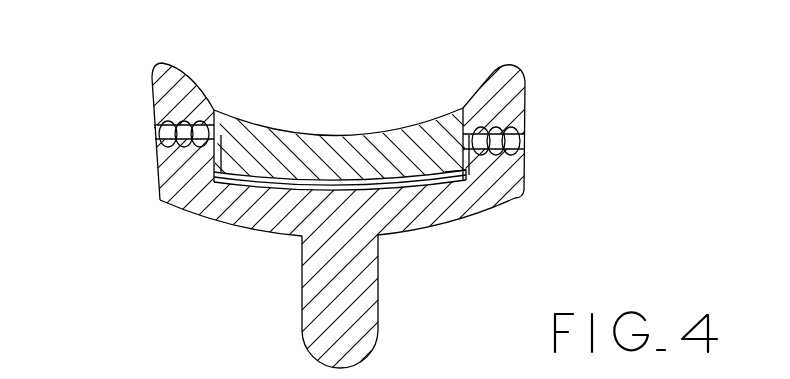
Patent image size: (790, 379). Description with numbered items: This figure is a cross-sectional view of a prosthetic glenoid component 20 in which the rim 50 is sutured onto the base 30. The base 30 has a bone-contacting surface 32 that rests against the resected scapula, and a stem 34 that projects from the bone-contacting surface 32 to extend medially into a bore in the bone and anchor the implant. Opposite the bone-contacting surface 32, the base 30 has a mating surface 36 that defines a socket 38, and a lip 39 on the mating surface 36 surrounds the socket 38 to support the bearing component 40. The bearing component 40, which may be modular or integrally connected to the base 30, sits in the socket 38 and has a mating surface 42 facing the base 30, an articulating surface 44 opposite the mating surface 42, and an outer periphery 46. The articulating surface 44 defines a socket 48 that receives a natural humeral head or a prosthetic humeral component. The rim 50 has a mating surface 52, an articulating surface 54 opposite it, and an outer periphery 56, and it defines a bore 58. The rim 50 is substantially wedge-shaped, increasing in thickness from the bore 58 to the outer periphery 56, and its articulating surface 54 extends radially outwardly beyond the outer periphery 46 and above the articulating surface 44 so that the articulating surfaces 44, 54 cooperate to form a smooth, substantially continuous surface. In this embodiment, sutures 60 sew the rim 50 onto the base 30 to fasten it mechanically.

The prosthetic glenoid component 20 is at (548, 44).
The base 30 is at (145, 193).
The bone-contacting surface 32 is at (408, 232).
The stem 34 is at (316, 326).
The mating surface 36 is at (446, 171).
The socket 38 is at (272, 170).
The lip 39 is at (526, 128).
The bearing component 40 is at (146, 133).
The mating surface 42 is at (256, 229).
The articulating surface 44 is at (362, 130).
The outer periphery 46 is at (477, 98).
The socket 48 is at (313, 121).
The rim 50 is at (141, 81).
The mating surface 52 is at (160, 200).
The articulating surface 54 is at (181, 66).
The outer periphery 56 is at (530, 97).
The bore 58 is at (446, 124).
The sutures 60 is at (522, 152).